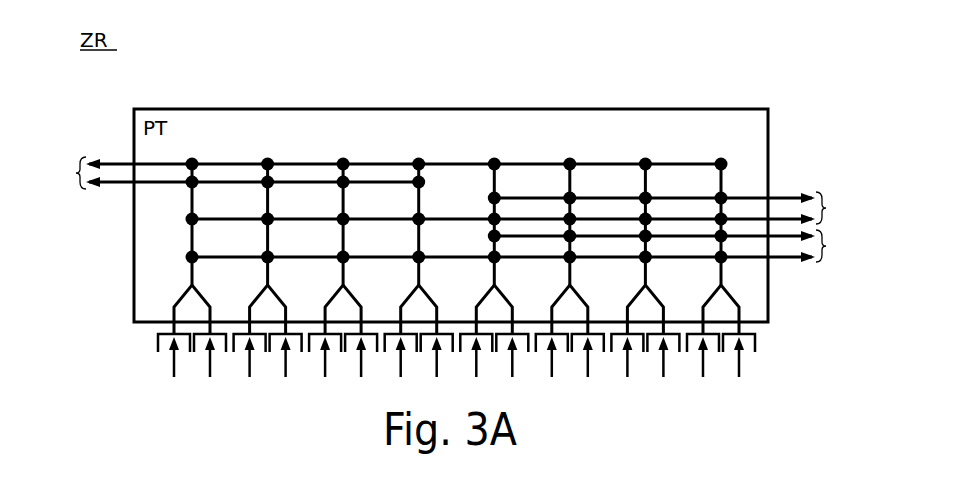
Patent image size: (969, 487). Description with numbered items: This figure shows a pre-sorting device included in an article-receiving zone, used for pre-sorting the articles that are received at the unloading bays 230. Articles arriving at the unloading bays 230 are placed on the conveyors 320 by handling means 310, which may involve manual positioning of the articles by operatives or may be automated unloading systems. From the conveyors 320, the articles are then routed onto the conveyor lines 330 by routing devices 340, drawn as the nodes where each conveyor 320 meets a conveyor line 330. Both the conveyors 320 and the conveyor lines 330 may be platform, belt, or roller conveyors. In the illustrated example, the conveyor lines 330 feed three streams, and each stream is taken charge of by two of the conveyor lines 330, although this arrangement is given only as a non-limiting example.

The routing device 340 is at (193, 157).
The conveyor line 330 is at (117, 184).
The conveyor 320 is at (190, 265).
The handling means 310 is at (175, 306).
The unloading bay 230 is at (150, 364).